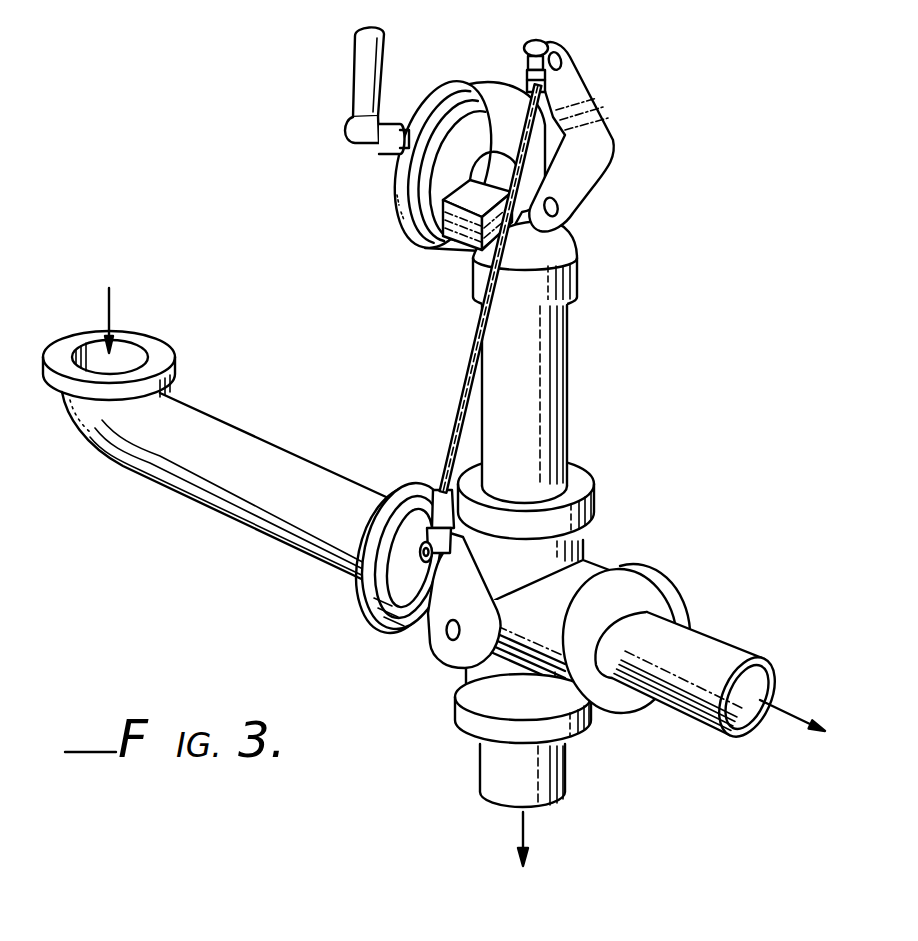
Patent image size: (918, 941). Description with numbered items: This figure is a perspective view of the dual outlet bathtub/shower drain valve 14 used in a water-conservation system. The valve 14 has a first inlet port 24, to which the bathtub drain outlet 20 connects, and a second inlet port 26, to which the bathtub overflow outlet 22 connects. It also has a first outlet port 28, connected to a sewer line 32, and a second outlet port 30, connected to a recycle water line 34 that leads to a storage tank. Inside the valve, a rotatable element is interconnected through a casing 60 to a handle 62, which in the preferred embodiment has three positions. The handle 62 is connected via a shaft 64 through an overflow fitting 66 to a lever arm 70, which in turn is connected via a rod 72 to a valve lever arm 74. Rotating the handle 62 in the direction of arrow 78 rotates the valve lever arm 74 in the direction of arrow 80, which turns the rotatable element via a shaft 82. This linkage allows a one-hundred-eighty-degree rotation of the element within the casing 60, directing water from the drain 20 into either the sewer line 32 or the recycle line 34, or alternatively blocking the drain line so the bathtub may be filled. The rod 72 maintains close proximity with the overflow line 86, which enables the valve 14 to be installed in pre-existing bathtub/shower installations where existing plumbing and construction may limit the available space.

The dual outlet bathtub/shower drain valve 14 is at (648, 505).
The drain outlet 20 is at (224, 432).
The overflow outlet 22 is at (583, 242).
The first inlet port 24 is at (373, 591).
The second inlet port 26 is at (596, 478).
The first outlet port 28 is at (462, 716).
The second outlet port 30 is at (672, 600).
The sewer line 32 is at (486, 770).
The recycle water line 34 is at (713, 648).
The casing 60 is at (588, 553).
The handle 62 is at (362, 38).
The shaft 64 is at (388, 150).
The overflow fitting 66 is at (397, 208).
The lever arm 70 is at (598, 124).
The rod 72 is at (458, 393).
The valve lever arm 74 is at (422, 608).
The arrow 78 is at (338, 68).
The arrow 80 is at (455, 572).
The shaft 82 is at (448, 638).
The overflow line 86 is at (572, 372).